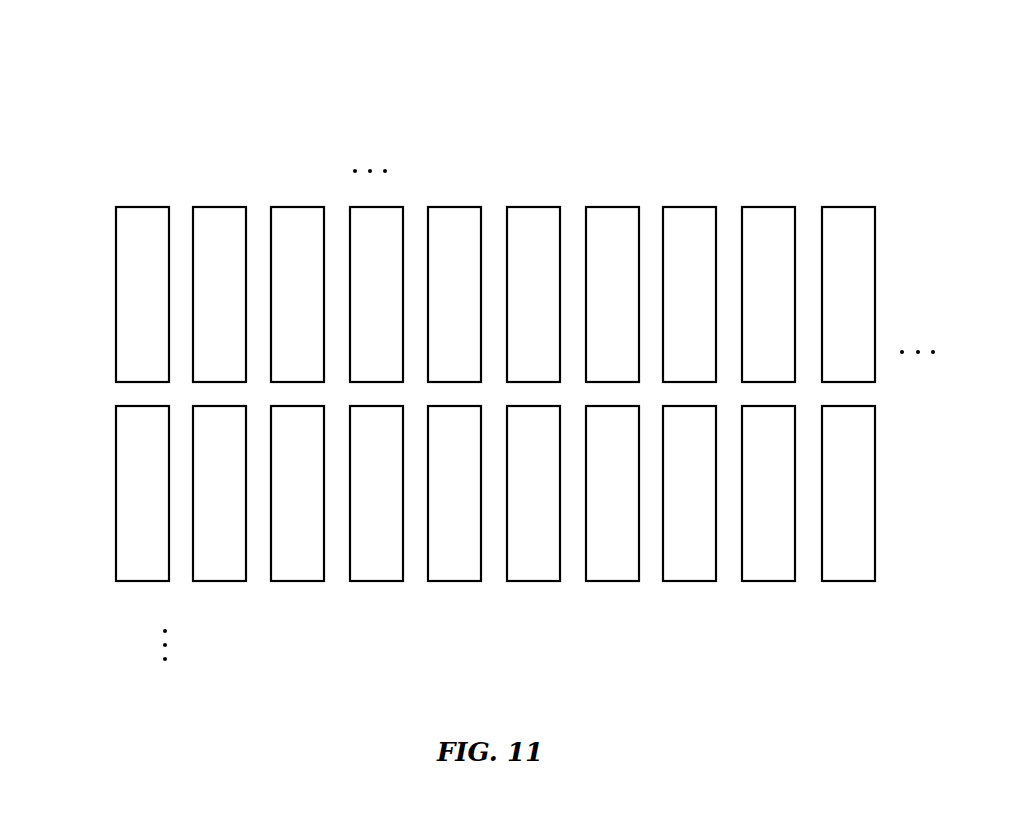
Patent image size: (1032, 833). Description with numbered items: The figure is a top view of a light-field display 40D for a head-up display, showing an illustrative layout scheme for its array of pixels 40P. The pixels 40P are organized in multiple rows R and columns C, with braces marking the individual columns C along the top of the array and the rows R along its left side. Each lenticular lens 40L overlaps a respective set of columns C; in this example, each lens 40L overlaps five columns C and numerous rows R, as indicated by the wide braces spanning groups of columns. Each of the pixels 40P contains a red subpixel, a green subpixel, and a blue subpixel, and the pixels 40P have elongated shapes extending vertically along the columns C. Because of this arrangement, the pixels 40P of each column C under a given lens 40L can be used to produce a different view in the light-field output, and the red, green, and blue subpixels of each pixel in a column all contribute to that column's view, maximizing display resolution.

The lenticular lens 40L is at (877, 85).
The pixels 40P is at (611, 582).
The light-field display 40D is at (802, 634).
The columns C is at (171, 179).
The rows R is at (57, 207).